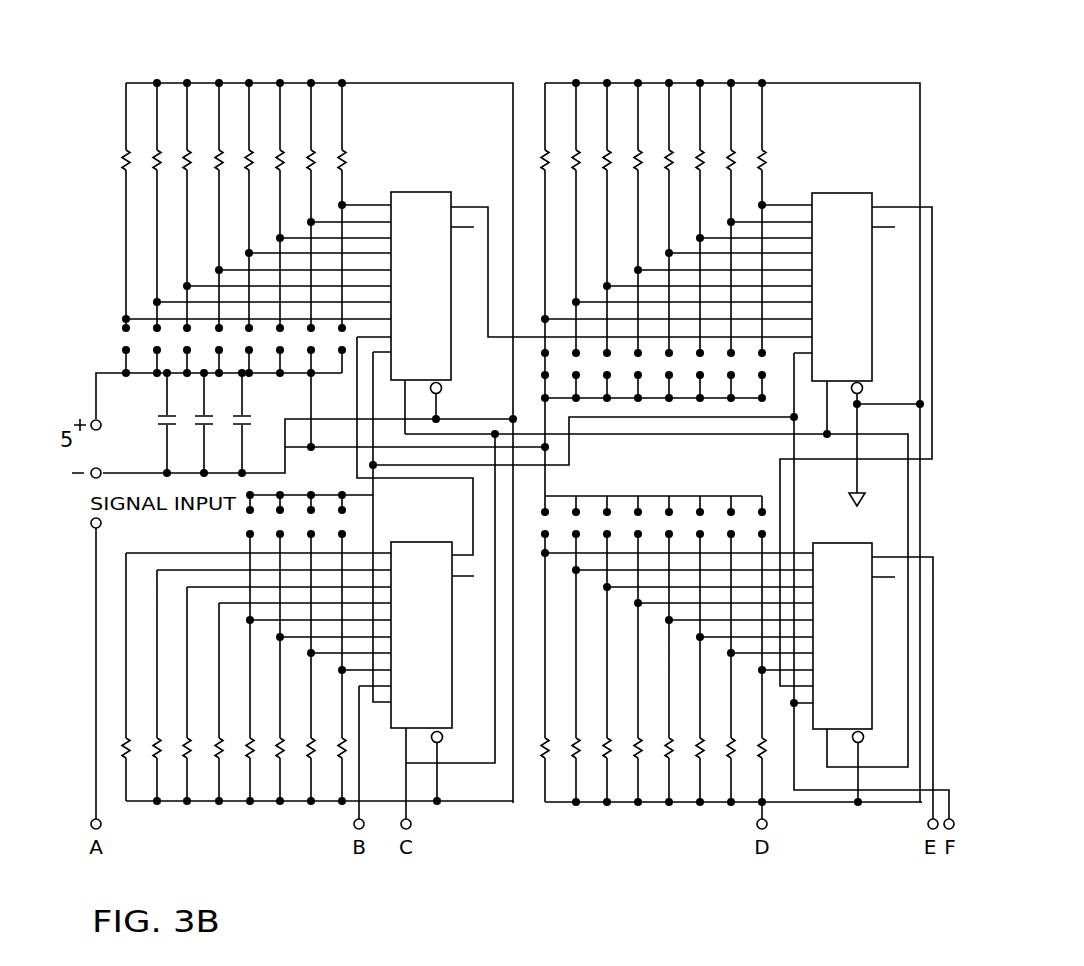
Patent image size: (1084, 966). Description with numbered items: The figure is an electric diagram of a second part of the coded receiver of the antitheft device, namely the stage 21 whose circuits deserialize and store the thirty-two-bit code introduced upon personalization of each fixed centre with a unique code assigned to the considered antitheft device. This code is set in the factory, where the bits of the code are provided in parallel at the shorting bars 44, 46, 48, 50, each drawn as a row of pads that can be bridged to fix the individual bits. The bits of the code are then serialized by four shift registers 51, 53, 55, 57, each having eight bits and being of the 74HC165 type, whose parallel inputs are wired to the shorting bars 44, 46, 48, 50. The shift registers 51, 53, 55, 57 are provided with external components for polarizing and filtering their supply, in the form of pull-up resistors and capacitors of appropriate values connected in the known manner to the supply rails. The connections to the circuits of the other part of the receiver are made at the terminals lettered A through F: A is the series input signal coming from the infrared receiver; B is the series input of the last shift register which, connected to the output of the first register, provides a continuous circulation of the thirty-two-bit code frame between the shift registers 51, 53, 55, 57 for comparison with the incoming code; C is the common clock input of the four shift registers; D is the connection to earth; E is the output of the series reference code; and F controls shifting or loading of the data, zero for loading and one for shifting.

The deserializing and storing stage 21 is at (396, 74).
The shorting bar 44 is at (106, 353).
The shorting bar 46 is at (291, 495).
The shorting bar 48 is at (598, 390).
The shorting bar 50 is at (648, 496).
The shift register 51 is at (397, 205).
The shift register 53 is at (836, 218).
The shift register 55 is at (442, 652).
The shift register 57 is at (858, 667).